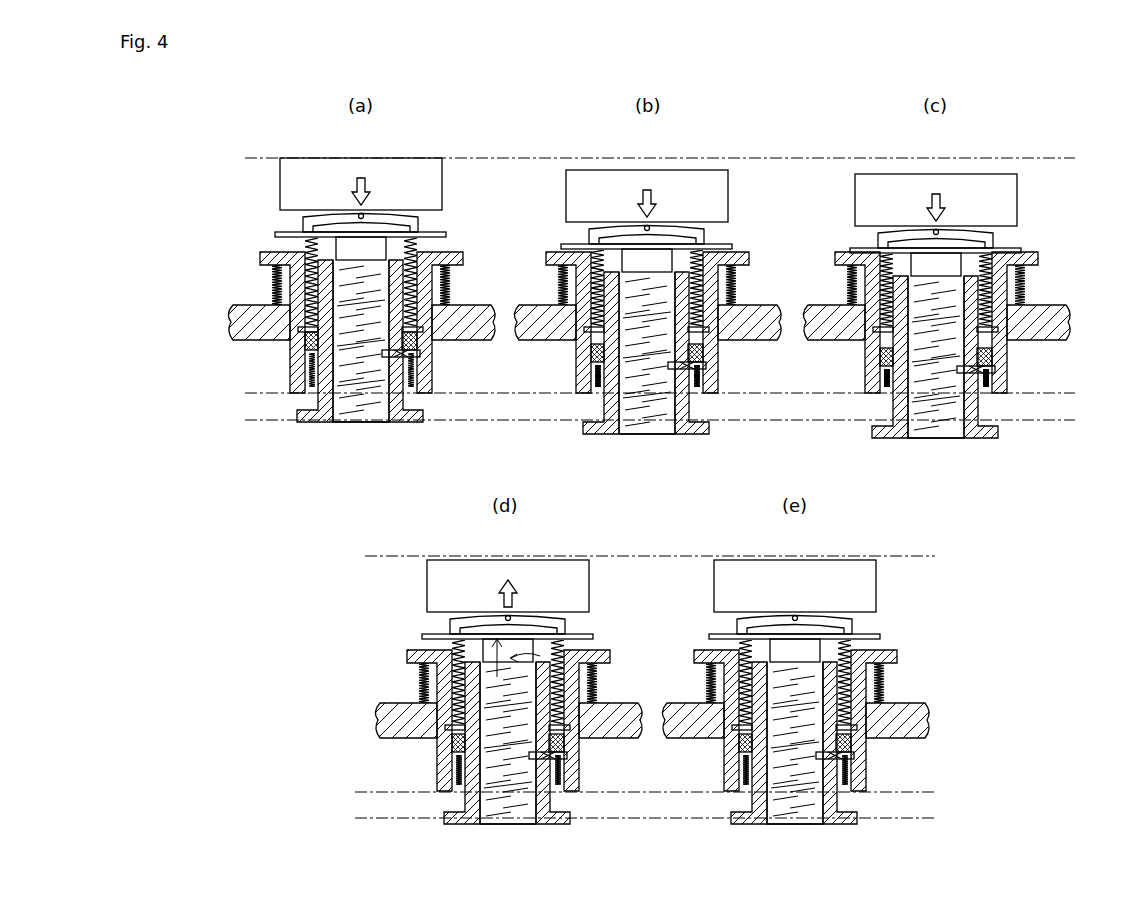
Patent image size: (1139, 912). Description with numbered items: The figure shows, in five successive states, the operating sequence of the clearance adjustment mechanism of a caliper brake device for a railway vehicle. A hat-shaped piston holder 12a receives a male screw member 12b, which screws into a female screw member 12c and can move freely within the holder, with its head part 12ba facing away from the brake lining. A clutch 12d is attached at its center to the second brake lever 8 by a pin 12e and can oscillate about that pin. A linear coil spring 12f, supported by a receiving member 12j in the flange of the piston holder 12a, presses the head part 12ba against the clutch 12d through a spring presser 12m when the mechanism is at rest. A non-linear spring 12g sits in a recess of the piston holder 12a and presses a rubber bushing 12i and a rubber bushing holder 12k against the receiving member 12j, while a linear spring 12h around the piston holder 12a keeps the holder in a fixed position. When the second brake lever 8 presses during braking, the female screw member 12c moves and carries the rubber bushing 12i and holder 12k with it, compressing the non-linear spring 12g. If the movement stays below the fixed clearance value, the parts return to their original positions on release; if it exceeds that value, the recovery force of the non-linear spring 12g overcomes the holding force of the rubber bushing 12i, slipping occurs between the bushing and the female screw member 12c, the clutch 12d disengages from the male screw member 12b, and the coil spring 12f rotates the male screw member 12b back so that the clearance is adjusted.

The second brake lever 8 is at (408, 172).
The pin 12e is at (351, 215).
The clutch 12d is at (420, 223).
The head part of the male screw member 12ba is at (338, 227).
The spring presser 12m is at (447, 235).
The male screw member 12b is at (352, 362).
The female screw member 12c is at (311, 416).
The rubber bushing 12i is at (305, 345).
The receiving member 12j is at (422, 333).
The piston holder 12a is at (289, 372).
The rubber bushing holder 12k is at (289, 322).
The linear spring 12h is at (272, 285).
The linear coil spring 12f is at (307, 245).
The non-linear spring 12g is at (432, 377).